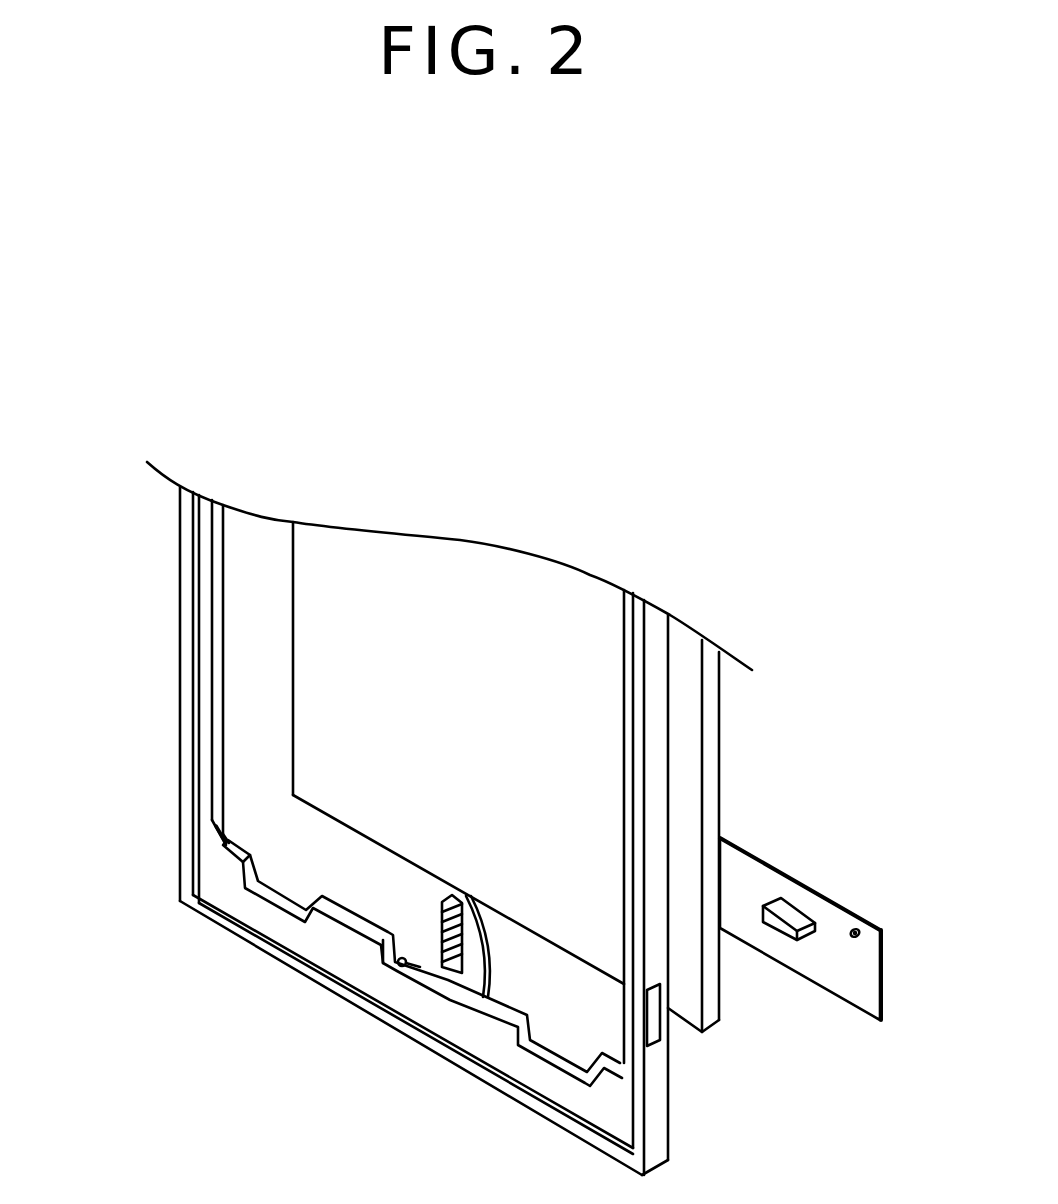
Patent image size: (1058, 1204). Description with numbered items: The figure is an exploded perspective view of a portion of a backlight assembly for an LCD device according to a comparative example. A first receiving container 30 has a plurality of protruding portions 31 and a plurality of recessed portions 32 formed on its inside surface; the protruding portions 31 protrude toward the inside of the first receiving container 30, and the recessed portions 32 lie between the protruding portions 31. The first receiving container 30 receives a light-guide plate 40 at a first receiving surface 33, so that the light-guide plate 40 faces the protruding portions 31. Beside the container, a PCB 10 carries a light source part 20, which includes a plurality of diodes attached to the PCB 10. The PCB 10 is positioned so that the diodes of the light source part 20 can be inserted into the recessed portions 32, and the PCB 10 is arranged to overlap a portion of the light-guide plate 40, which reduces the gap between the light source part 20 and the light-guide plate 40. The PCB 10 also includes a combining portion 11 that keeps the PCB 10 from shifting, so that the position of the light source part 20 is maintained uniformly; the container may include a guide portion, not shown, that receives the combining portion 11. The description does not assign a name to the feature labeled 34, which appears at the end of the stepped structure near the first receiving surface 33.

The PCB 10 is at (868, 978).
The combining portion 11 is at (852, 940).
The light source part 20 is at (783, 903).
The first receiving container 30 is at (650, 1117).
The protruding portions 31 is at (487, 1017).
The recessed portions 32 is at (401, 966).
The first receiving surface 33 is at (227, 840).
The hook 34 is at (203, 842).
The light-guide plate 40 is at (708, 1000).